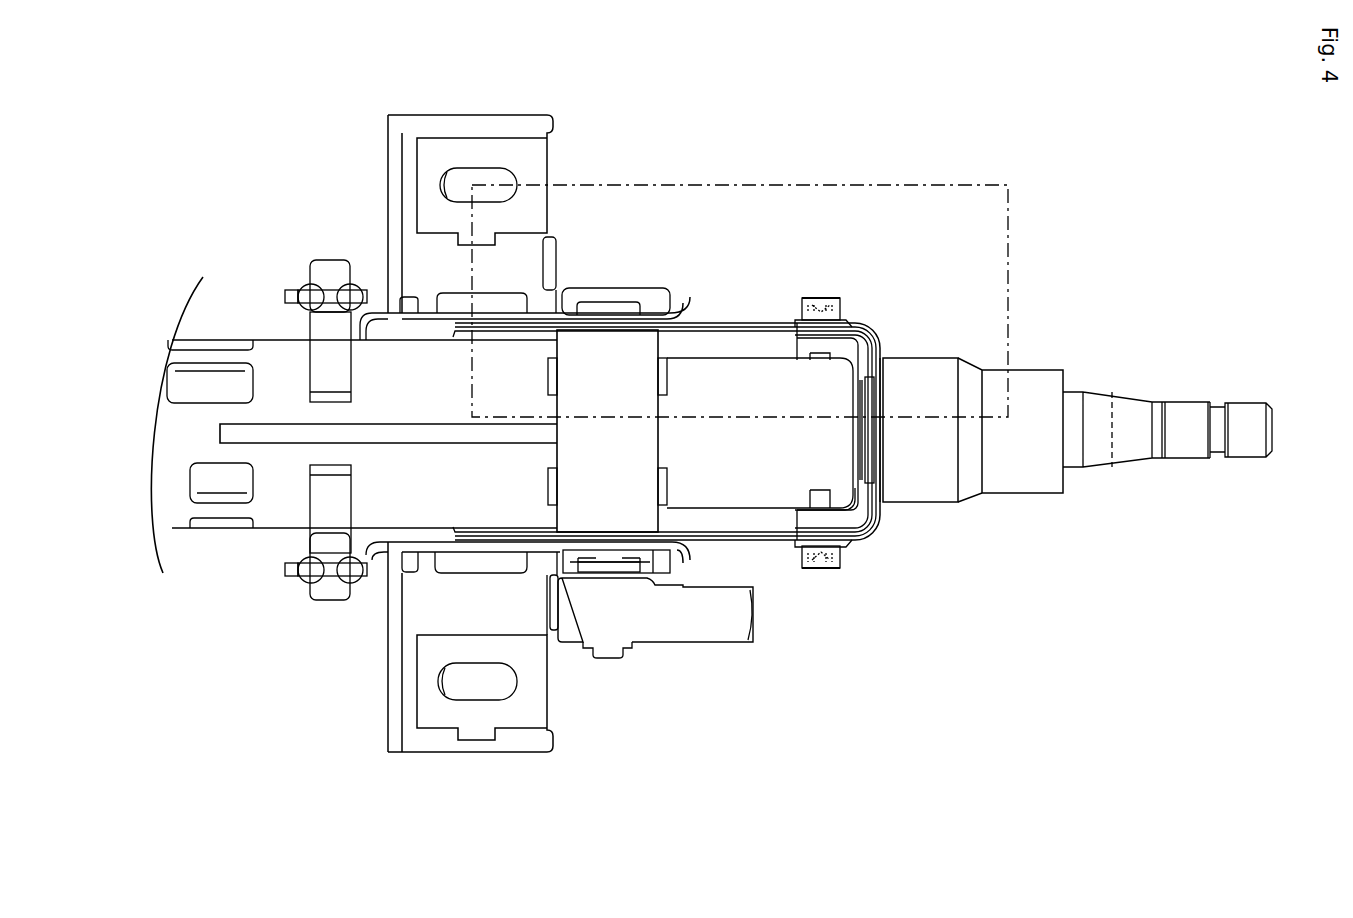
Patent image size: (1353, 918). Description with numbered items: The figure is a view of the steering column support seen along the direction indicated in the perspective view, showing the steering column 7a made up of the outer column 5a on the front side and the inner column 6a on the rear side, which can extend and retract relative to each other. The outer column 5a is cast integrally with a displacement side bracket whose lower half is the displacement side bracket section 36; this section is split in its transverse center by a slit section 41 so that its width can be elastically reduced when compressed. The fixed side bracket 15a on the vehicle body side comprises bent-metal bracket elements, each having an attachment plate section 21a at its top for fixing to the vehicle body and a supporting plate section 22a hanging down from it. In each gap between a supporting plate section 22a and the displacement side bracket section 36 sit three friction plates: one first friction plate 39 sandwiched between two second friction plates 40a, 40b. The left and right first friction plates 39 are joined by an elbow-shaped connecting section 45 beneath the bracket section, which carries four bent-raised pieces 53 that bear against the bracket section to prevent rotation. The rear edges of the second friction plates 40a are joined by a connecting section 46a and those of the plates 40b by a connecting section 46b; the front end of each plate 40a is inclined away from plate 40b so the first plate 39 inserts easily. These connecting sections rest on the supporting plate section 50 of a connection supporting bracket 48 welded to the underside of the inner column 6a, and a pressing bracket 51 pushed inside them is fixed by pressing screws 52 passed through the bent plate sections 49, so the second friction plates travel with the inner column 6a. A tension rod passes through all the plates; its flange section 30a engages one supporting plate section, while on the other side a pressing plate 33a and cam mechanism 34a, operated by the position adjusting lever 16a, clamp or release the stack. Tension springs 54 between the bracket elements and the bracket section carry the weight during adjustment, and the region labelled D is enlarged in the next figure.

The outer column 5a is at (280, 517).
The slit section 41 is at (372, 426).
The tension springs 54 is at (302, 285).
The attachment plate section 21a is at (440, 125).
The displacement side bracket section 36 is at (417, 353).
The fixed side bracket 15a is at (418, 590).
The supporting plate sections 22a is at (503, 320).
The flange section 30a is at (592, 306).
The connecting section 45 is at (618, 343).
The bent-raised pieces 53 is at (660, 367).
The first friction plate 39 is at (773, 333).
The second friction plate 40b is at (755, 337).
The second friction plate 40a is at (715, 337).
The connecting section 46a is at (878, 330).
The connecting section 46b is at (873, 507).
The pressing bracket 51 is at (857, 423).
The connection supporting bracket 48 is at (880, 473).
The supporting plate section 50 is at (872, 447).
The bent plate sections 49 is at (848, 320).
The pressing screws 52 is at (810, 300).
The inner column 6a is at (918, 362).
The steering column 7a is at (950, 360).
The position adjusting lever 16a is at (697, 630).
The cam mechanism 34a is at (594, 570).
The pressing plate 33a is at (602, 555).
The section D is at (1010, 233).